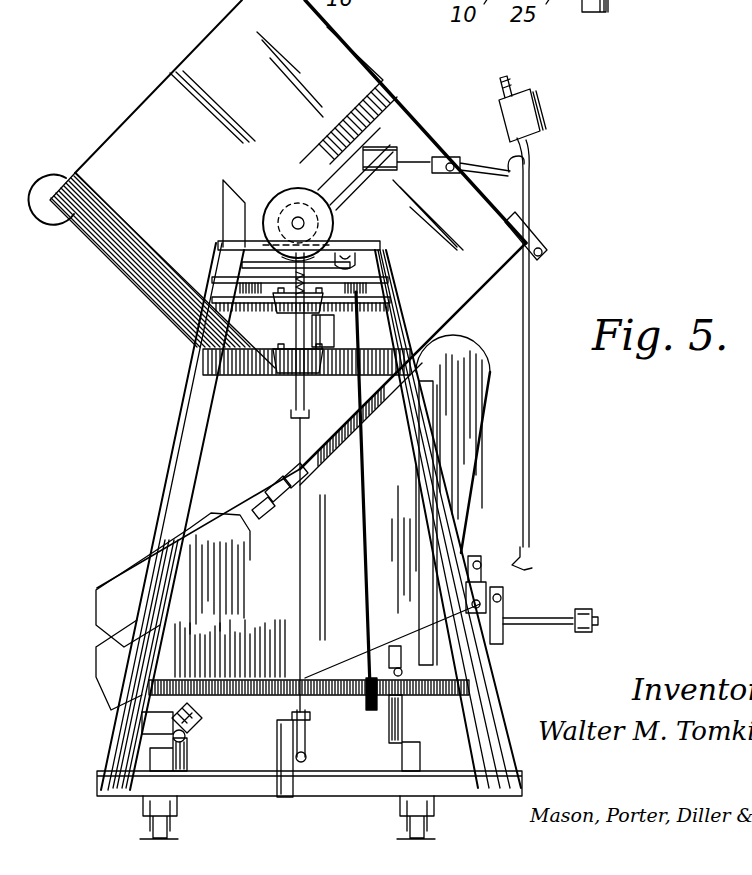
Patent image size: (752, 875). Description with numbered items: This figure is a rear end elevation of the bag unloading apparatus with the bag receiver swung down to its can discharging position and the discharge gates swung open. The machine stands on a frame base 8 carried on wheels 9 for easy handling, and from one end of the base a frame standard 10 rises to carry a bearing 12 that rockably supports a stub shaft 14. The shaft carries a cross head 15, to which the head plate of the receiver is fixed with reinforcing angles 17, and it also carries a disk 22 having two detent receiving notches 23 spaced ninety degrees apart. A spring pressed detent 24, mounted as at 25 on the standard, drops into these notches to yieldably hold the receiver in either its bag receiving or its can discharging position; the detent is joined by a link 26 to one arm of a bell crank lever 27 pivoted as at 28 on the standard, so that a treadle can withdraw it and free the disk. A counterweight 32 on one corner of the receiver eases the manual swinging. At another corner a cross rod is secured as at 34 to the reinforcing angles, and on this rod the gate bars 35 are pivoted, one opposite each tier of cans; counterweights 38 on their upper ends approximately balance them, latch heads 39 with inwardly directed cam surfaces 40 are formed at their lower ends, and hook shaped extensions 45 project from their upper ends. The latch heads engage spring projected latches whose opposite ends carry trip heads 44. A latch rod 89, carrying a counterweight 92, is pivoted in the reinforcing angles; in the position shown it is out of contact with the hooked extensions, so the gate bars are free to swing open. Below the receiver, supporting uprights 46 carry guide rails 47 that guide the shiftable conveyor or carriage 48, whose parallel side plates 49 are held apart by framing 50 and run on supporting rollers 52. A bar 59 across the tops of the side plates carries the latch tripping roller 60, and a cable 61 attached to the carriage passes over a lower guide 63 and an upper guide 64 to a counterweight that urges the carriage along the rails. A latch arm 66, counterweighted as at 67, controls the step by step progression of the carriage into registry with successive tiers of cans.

The frame base 8 is at (340, 787).
The wheels 9 is at (172, 812).
The frame standard 10 is at (180, 482).
The bearing 12 is at (297, 217).
The stub shaft 14 is at (293, 219).
The cross head 15 is at (328, 183).
The reinforcing angles 17 is at (366, 110).
The disk 22 is at (340, 222).
The detent receiving notches 23 is at (270, 232).
The spring pressed detent 24 is at (240, 263).
The detent mounting 25 is at (270, 387).
The link 26 is at (299, 586).
The bell crank lever 27 is at (312, 757).
The bell crank lever pivot 28 is at (312, 735).
The counterweight 32 is at (58, 173).
The cross rod securing point 34 is at (542, 243).
The gate bars 35 is at (531, 382).
The counterweights 38 is at (541, 120).
The latch heads 39 is at (530, 555).
The cam surface 40 is at (533, 573).
The trip heads 44 is at (272, 492).
The hook shaped extensions 45 is at (509, 168).
The supporting uprights 46 is at (418, 722).
The guide rails 47 is at (188, 726).
The shiftable conveyor or carriage 48 is at (234, 574).
The side plates 49 is at (237, 593).
The framing 50 is at (430, 417).
The supporting rollers 52 is at (192, 708).
The bar 59 is at (274, 518).
The latch tripping roller 60 is at (300, 498).
The cable 61 is at (370, 578).
The lower guide 63 is at (367, 698).
The upper guide 64 is at (384, 270).
The latch arm 66 is at (518, 618).
The latch arm counterweight 67 is at (584, 609).
The latch rod 89 is at (496, 178).
The latch rod counterweight 92 is at (409, 110).